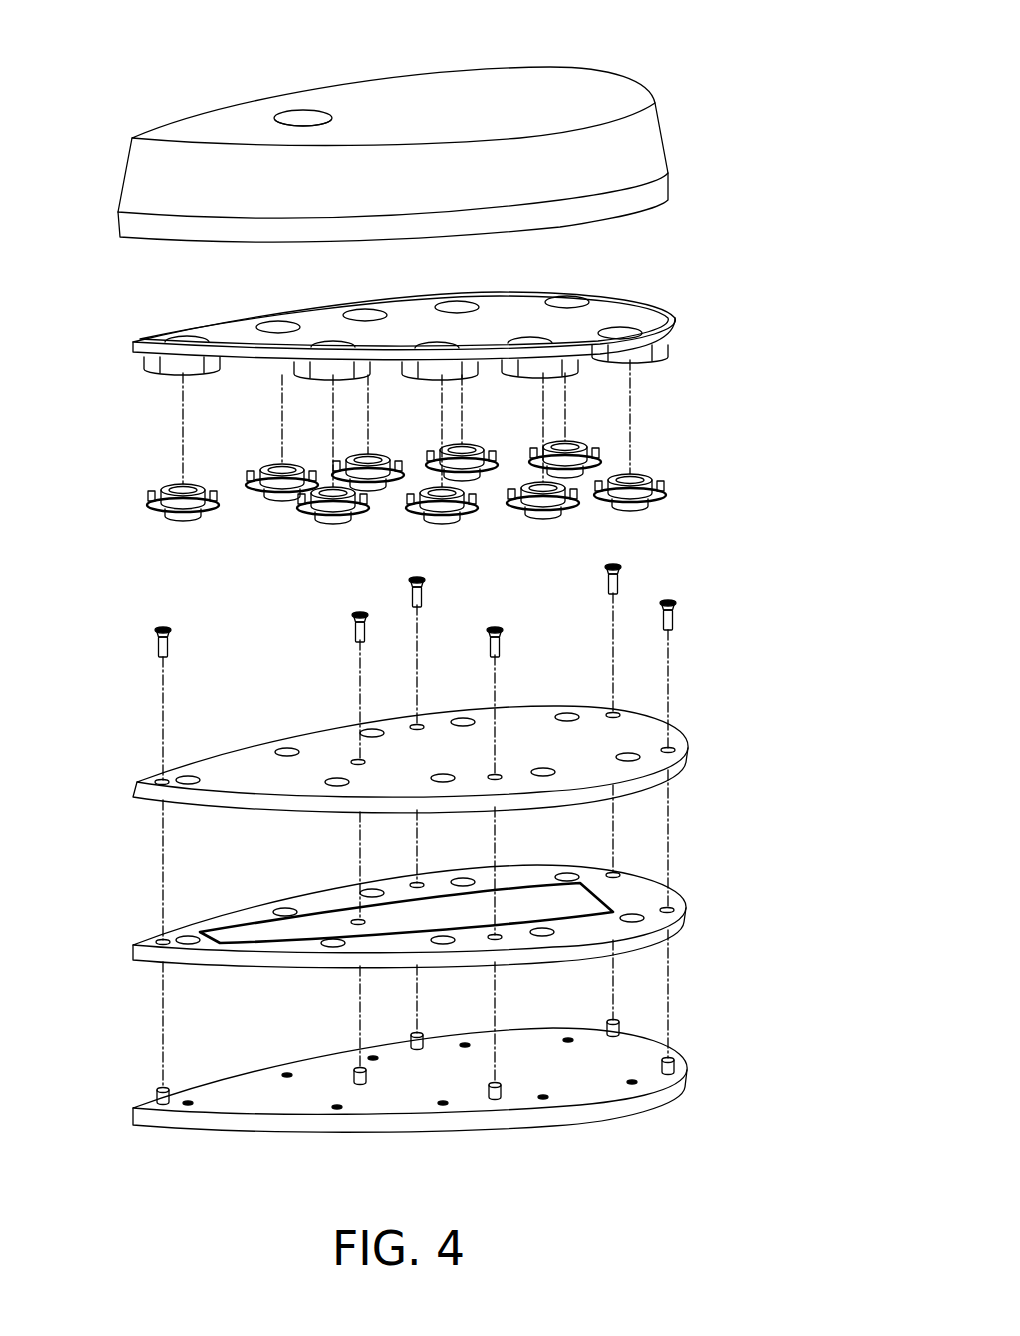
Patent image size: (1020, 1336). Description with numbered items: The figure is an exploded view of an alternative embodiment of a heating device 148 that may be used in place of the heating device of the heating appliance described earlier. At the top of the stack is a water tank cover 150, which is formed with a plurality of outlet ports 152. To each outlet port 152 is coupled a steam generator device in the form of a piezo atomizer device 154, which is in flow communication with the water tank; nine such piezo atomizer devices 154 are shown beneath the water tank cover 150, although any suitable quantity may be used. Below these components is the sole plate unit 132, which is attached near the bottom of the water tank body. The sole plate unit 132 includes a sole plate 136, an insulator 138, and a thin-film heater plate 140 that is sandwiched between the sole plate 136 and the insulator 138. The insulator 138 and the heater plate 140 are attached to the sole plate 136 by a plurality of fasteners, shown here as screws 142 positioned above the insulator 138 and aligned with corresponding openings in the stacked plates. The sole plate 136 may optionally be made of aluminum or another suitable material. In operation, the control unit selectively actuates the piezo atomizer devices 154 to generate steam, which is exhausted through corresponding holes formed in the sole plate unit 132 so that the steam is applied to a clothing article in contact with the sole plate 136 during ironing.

The heating device 148 is at (170, 47).
The water tank cover 150 is at (215, 325).
The outlet ports 152 is at (545, 340).
The piezo atomizer device 154 is at (587, 441).
The sole plate unit 132 is at (750, 892).
The screws 142 is at (157, 640).
The insulator 138 is at (690, 735).
The thin-film heater plate 140 is at (253, 907).
The sole plate 136 is at (627, 1112).